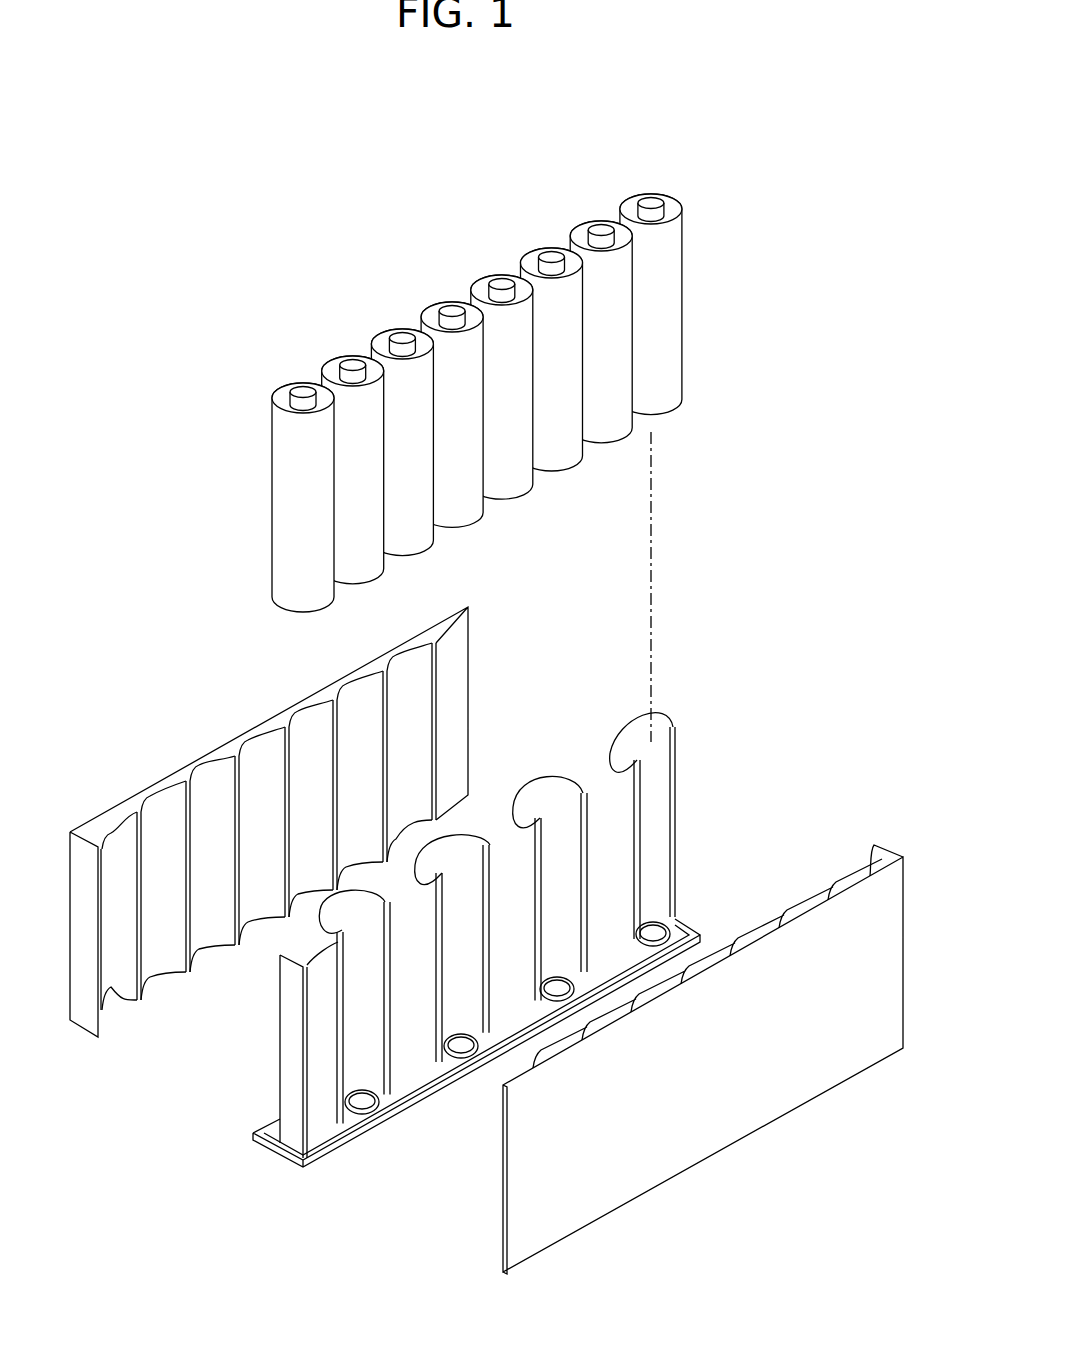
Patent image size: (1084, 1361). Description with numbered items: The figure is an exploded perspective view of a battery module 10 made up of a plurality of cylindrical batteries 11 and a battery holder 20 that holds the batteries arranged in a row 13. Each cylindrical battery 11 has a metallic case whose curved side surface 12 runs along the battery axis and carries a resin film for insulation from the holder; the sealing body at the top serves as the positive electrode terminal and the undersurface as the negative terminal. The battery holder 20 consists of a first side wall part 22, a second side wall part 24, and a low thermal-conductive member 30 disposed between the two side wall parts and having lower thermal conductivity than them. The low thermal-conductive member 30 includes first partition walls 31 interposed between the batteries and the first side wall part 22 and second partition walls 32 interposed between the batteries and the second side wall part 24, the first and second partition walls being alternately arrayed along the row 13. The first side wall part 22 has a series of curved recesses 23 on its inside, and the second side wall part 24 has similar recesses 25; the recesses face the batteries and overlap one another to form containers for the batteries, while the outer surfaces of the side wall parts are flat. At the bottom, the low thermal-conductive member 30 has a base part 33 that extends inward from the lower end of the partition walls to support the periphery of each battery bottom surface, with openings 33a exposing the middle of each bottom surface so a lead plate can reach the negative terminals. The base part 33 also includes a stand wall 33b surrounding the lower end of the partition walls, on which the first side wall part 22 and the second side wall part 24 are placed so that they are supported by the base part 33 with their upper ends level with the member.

The battery module 10 is at (818, 105).
The cylindrical battery 11 is at (303, 390).
The side surface 12 is at (294, 490).
The row 13 is at (694, 312).
The battery holder 20 is at (796, 687).
The first side wall part 22 is at (603, 1210).
The recess 23 is at (868, 855).
The second side wall part 24 is at (183, 767).
The recess 25 is at (120, 989).
The low thermal-conductive member 30 is at (680, 820).
The first partition wall 31 is at (600, 805).
The second partition wall 32 is at (552, 791).
The base part 33 is at (388, 1102).
The opening 33a is at (364, 1106).
The stand wall 33b is at (448, 1080).